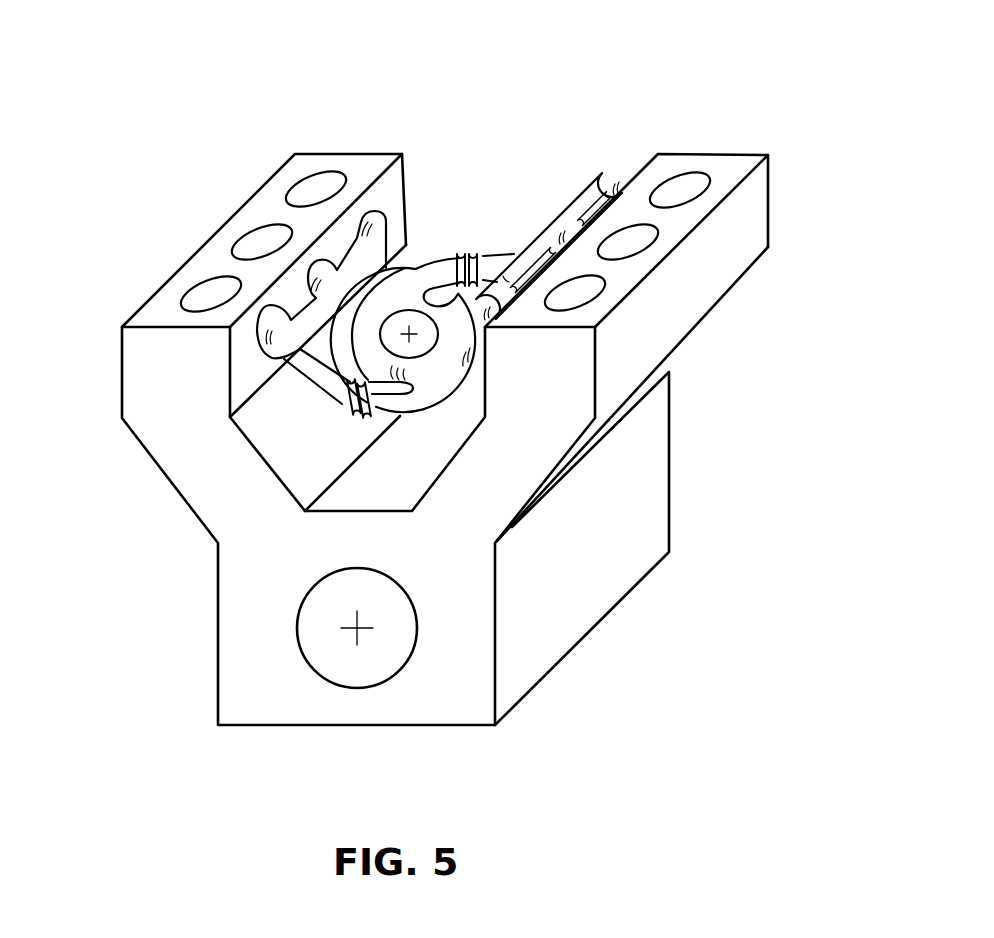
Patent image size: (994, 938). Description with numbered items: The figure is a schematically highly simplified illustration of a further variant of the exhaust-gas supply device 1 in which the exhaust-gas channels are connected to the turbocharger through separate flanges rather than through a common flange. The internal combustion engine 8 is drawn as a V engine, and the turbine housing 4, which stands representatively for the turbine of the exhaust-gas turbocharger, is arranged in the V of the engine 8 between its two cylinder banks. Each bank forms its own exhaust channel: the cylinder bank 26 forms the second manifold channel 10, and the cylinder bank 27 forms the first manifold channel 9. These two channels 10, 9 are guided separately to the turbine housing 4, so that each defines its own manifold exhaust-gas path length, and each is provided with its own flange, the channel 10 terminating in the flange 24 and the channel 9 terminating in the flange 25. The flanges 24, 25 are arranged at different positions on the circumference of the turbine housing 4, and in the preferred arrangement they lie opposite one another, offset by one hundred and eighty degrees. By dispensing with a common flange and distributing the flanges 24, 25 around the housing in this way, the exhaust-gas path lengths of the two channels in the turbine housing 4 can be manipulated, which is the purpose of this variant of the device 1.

The exhaust-gas supply device 1 is at (528, 120).
The turbine housing 4 is at (427, 250).
The internal combustion engine 8 is at (718, 346).
The first manifold channel 9 is at (322, 358).
The second manifold channel 10 is at (528, 250).
The flange 24 is at (466, 244).
The flange 25 is at (345, 420).
The cylinder bank 26 is at (720, 157).
The cylinder bank 27 is at (312, 158).